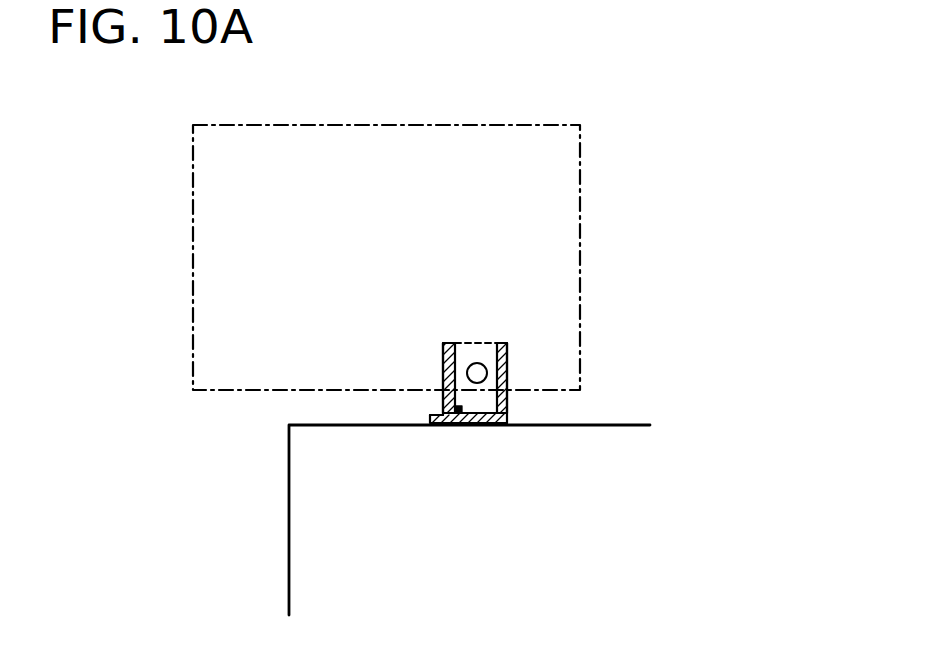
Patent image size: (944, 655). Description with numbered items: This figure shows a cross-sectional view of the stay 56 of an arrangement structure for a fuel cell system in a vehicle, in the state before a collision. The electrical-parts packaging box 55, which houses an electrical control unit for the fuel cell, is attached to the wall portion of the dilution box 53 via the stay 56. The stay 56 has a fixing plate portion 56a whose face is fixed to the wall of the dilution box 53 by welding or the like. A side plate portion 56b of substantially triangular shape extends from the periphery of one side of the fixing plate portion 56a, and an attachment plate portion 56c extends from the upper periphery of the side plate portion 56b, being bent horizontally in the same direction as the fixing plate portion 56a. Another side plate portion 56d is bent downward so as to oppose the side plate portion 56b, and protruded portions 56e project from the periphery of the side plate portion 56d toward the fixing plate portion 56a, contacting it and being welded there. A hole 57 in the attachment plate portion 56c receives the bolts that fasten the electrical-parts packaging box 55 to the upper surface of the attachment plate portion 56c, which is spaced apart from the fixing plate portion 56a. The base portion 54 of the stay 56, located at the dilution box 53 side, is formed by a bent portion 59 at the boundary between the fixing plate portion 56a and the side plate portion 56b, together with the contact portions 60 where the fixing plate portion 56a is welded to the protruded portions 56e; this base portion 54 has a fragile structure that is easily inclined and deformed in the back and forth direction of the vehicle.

The dilution box 53 is at (280, 555).
The base portion 54 is at (420, 400).
The electrical-parts packaging box 55 is at (380, 125).
The stay 56 is at (496, 330).
The fixing plate portion 56a is at (478, 426).
The side plate portion 56b is at (508, 411).
The attachment plate portion 56c is at (473, 343).
The side plate portion 56d is at (443, 362).
The protruded portions 56e is at (467, 426).
The hole 57 is at (468, 382).
The bent portion 59 is at (510, 427).
The contact portions 60 is at (445, 426).